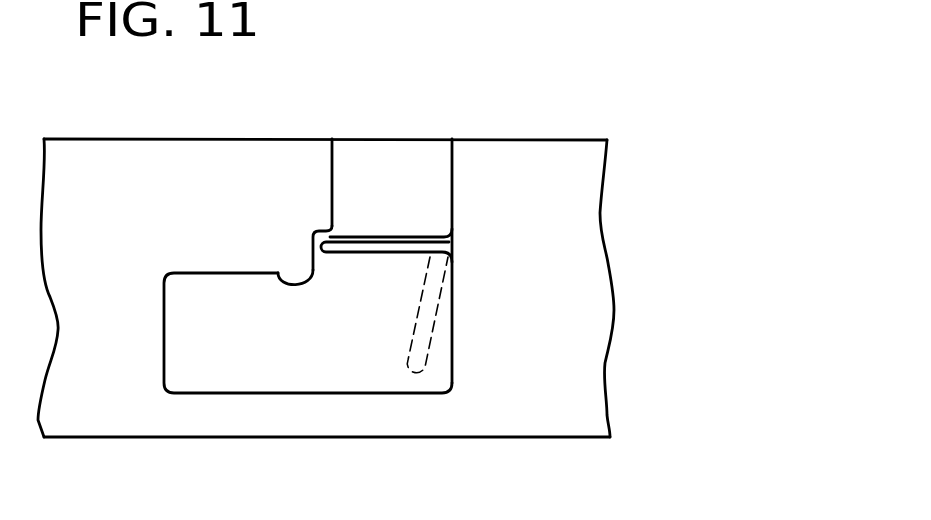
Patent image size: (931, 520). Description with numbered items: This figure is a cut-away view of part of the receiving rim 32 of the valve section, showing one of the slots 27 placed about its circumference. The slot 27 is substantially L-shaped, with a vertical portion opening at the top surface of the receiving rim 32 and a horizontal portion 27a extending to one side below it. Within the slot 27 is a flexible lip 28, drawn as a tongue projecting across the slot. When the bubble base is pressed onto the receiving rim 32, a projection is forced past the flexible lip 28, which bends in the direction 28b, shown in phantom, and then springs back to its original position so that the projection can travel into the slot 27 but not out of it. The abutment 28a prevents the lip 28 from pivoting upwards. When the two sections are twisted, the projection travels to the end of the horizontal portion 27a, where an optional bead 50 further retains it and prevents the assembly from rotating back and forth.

The slot 27 is at (420, 168).
The horizontal portion 27a is at (213, 285).
The flexible lip 28 is at (352, 243).
The abutment 28a is at (316, 228).
The direction of bending 28b is at (427, 345).
The receiving rim 32 is at (583, 234).
The bead 50 is at (297, 276).